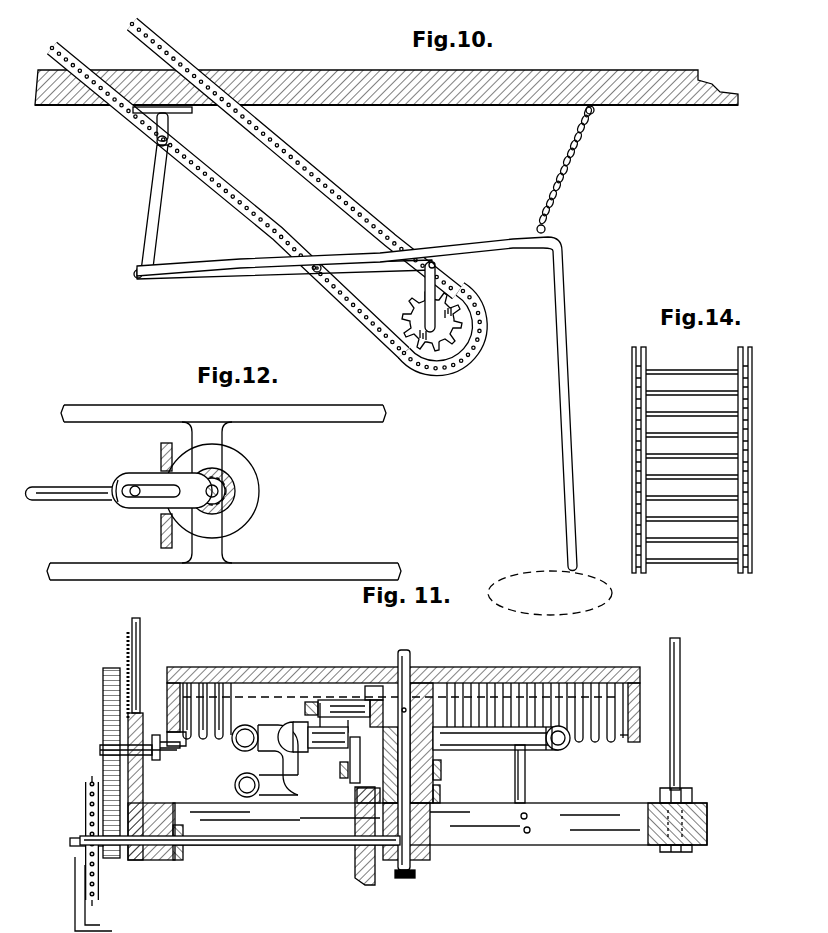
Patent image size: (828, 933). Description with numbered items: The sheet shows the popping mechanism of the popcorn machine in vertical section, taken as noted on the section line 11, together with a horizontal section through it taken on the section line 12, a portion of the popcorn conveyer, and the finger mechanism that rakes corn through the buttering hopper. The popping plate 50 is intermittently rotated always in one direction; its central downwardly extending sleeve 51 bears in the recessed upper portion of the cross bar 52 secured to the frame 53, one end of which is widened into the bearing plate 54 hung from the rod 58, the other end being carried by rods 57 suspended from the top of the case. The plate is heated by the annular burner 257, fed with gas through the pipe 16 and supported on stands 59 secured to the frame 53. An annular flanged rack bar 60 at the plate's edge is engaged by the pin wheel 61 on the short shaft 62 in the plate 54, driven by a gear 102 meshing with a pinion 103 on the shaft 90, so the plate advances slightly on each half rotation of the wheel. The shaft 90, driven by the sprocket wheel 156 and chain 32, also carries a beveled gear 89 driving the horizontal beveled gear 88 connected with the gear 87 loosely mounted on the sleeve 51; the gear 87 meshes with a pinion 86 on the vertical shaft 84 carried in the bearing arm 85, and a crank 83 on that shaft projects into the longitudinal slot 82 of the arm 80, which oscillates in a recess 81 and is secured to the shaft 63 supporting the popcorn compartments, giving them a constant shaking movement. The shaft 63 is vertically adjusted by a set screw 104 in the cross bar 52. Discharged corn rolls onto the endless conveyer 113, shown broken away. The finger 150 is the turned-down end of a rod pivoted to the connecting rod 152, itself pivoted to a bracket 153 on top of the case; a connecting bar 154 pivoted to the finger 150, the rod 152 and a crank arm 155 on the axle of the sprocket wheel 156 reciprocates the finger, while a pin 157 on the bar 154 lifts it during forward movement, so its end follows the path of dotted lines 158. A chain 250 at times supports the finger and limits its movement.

In FIG. 10, the ceiling beam 11 is at (536, 70).
In FIG. 10, the chain 32 is at (320, 182).
In FIG. 10, the bracket 153 is at (168, 125).
In FIG. 10, the connecting rod 152 is at (148, 238).
In FIG. 10, the connecting bar 154 is at (268, 276).
In FIG. 10, the pin 157 is at (317, 273).
In FIG. 10, the crank arm 155 is at (437, 303).
In FIG. 11, the crank arm 155 is at (112, 930).
In FIG. 10, the sprocket wheel 156 is at (424, 343).
In FIG. 11, the sprocket wheel 156 is at (86, 800).
In FIG. 10, the finger 150 is at (560, 422).
In FIG. 10, the dotted lines 158 is at (536, 571).
In FIG. 10, the chain 250 is at (572, 170).
In FIG. 12, the frame 53 is at (325, 408).
In FIG. 11, the frame 53 is at (550, 847).
In FIG. 12, the cross bar 52 is at (203, 431).
In FIG. 11, the cross bar 52 is at (432, 835).
In FIG. 12, the horizontal beveled gear 88 is at (250, 469).
In FIG. 11, the horizontal beveled gear 88 is at (441, 795).
In FIG. 12, the beveled gear 89 is at (163, 465).
In FIG. 11, the beveled gear 89 is at (358, 862).
In FIG. 12, the sleeve 51 is at (228, 480).
In FIG. 11, the sleeve 51 is at (437, 744).
In FIG. 12, the shaft 63 is at (220, 494).
In FIG. 11, the shaft 63 is at (400, 653).
In FIG. 12, the shaft 90 is at (70, 486).
In FIG. 11, the shaft 90 is at (292, 848).
In FIG. 12, the arm 80 is at (233, 508).
In FIG. 11, the arm 80 is at (372, 700).
In FIG. 12, the longitudinal slot 82 is at (126, 499).
In FIG. 11, the longitudinal slot 82 is at (336, 700).
In FIG. 12, the crank 83 is at (136, 498).
In FIG. 11, the crank 83 is at (305, 709).
In FIG. 14, the endless conveyer 113 is at (752, 433).
In FIG. 11, the rod 58 is at (140, 646).
In FIG. 11, the liquid level 12 is at (308, 686).
In FIG. 11, the recess 81 is at (370, 667).
In FIG. 11, the popping plate 50 is at (531, 667).
In FIG. 11, the gear 102 is at (108, 725).
In FIG. 11, the pin wheel 61 is at (178, 755).
In FIG. 11, the short shaft 62 is at (160, 752).
In FIG. 11, the pipe 16 is at (240, 788).
In FIG. 11, the vertical shaft 84 is at (340, 768).
In FIG. 11, the bearing arm 85 is at (332, 766).
In FIG. 11, the pinion 86 is at (357, 795).
In FIG. 11, the gear 87 is at (442, 770).
In FIG. 11, the stands 59 is at (527, 790).
In FIG. 11, the flanged rack bar 60 is at (640, 714).
In FIG. 11, the rods 57 is at (681, 714).
In FIG. 11, the annular burner 257 is at (566, 752).
In FIG. 11, the pinion 103 is at (110, 858).
In FIG. 11, the bearing plate 54 is at (171, 861).
In FIG. 11, the set screw 104 is at (415, 874).